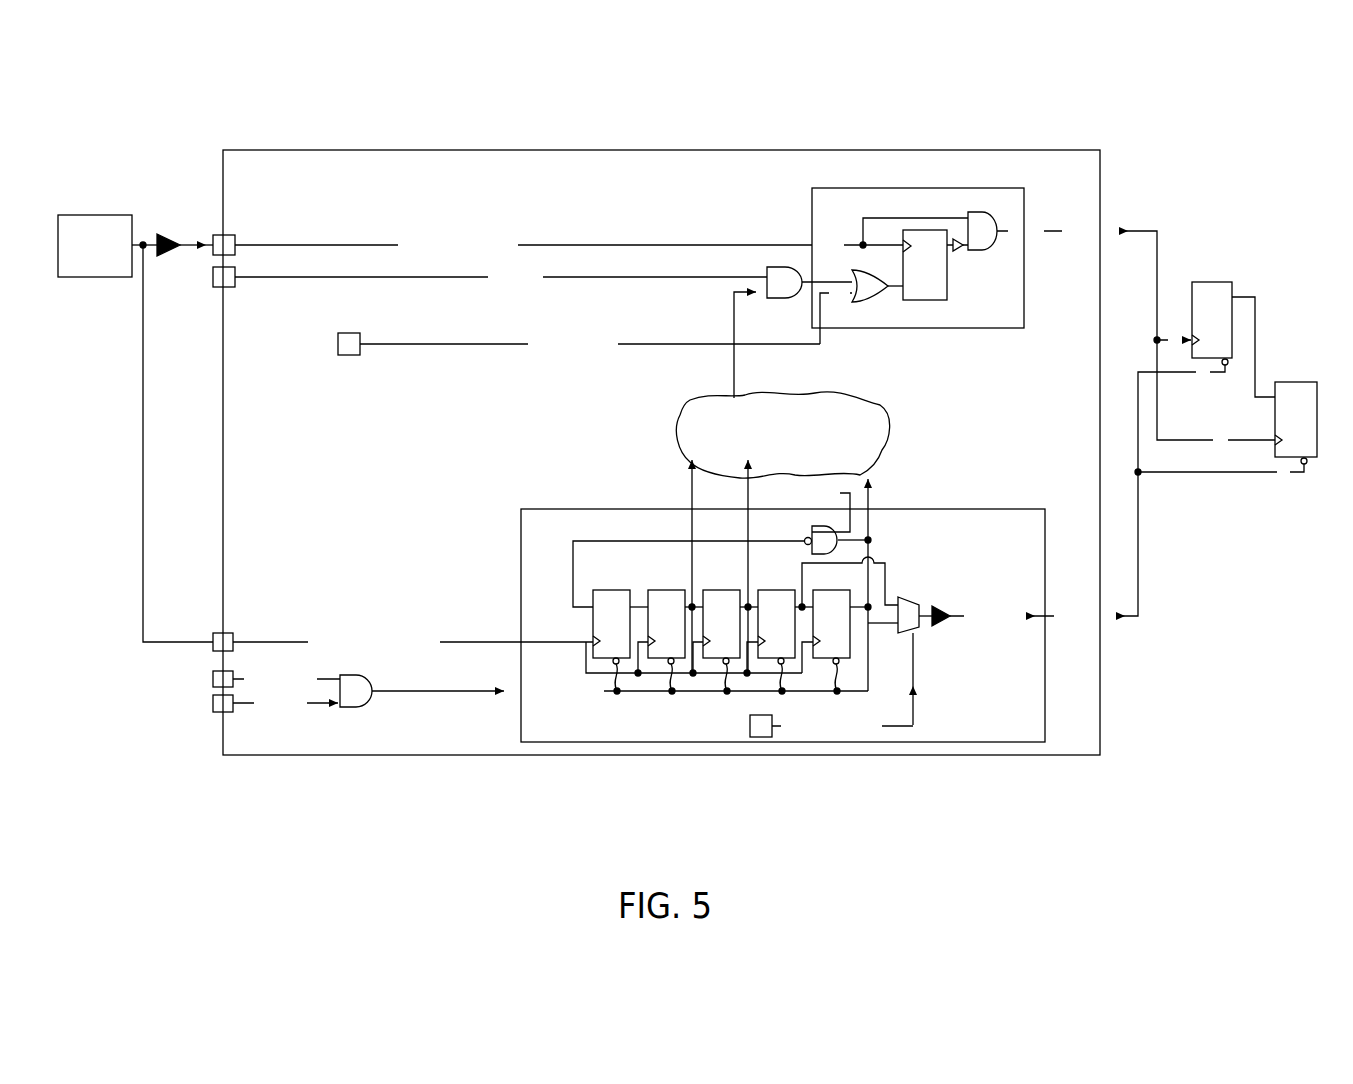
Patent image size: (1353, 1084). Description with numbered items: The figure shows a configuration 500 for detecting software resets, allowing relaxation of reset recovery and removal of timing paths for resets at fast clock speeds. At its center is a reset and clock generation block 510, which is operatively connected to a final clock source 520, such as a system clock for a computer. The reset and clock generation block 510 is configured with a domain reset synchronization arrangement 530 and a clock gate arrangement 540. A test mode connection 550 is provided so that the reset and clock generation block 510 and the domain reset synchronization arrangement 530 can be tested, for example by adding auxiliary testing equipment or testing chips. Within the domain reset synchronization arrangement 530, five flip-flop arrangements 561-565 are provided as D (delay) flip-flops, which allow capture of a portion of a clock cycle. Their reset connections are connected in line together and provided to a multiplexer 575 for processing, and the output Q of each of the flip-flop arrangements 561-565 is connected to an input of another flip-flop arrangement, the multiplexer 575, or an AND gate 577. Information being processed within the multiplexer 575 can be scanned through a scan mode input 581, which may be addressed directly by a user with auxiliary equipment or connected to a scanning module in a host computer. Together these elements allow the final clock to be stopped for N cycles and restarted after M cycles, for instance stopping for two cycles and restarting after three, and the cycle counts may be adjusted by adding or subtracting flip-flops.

The configuration 500 is at (1197, 150).
The reset and clock generation block 510 is at (430, 141).
The final clock source 520 is at (100, 215).
The domain reset synchronization arrangement 530 is at (550, 509).
The clock gate arrangement 540 is at (992, 330).
The test mode connection 550 is at (340, 357).
The flip-flop arrangements 561-565 is at (604, 711).
The multiplexer 575 is at (910, 597).
The AND gate 577 is at (813, 541).
The scan mode input 581 is at (752, 741).